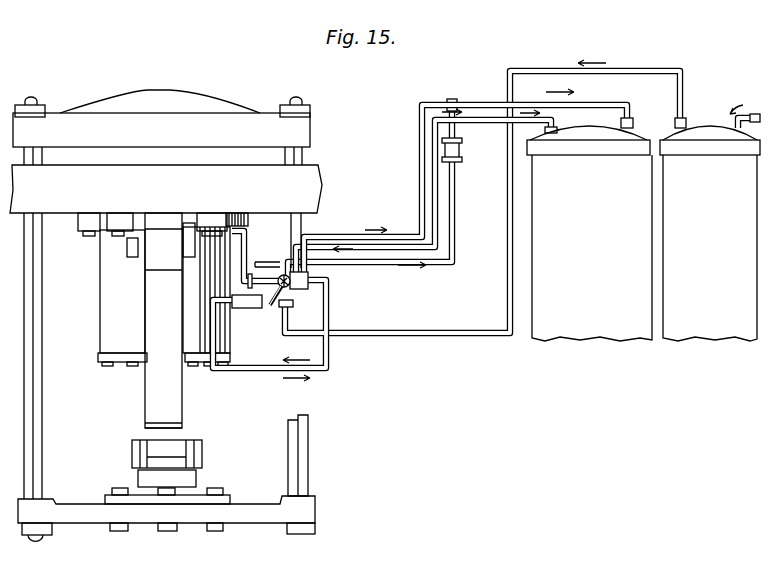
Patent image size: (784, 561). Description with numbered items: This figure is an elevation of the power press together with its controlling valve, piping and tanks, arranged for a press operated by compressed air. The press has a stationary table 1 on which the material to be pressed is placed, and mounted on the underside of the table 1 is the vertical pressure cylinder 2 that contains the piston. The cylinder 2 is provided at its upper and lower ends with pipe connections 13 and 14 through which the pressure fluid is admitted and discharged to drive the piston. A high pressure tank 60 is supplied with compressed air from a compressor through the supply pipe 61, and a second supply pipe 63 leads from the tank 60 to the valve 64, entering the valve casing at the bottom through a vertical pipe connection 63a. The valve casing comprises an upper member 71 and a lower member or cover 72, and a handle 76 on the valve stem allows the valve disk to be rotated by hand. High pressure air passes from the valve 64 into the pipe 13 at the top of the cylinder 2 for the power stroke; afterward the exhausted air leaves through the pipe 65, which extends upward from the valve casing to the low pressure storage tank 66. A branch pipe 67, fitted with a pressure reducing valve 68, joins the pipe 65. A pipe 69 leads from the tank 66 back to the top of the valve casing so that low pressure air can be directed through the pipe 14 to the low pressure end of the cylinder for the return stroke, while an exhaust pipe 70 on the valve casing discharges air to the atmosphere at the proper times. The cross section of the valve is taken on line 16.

The table 1 is at (160, 199).
The pressure cylinder 2 is at (105, 306).
The pipe connection 13 is at (247, 256).
The pipe connection 14 is at (262, 355).
The section line 16 is at (358, 252).
The high pressure tank 60 is at (710, 233).
The supply pipe 61 is at (752, 113).
The high pressure supply pipe 63 is at (631, 69).
The vertical pipe connection 63a is at (288, 334).
The valve 64 is at (248, 309).
The pipe 65 is at (480, 104).
The low pressure storage tank 66 is at (589, 233).
The branch pipe 67 is at (450, 106).
The pressure reducing valve 68 is at (462, 149).
The pipe 69 is at (432, 181).
The exhaust pipe 70 is at (273, 304).
The upper member 71 is at (291, 272).
The lower member or cover 72 is at (294, 305).
The handle 76 is at (263, 266).